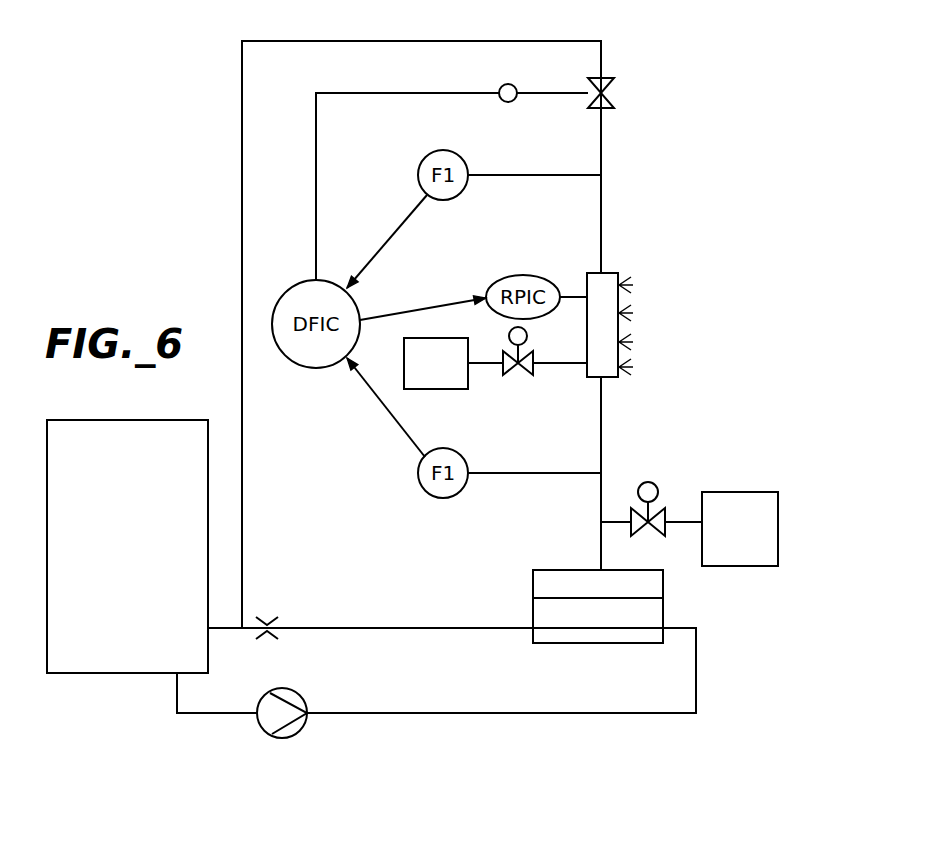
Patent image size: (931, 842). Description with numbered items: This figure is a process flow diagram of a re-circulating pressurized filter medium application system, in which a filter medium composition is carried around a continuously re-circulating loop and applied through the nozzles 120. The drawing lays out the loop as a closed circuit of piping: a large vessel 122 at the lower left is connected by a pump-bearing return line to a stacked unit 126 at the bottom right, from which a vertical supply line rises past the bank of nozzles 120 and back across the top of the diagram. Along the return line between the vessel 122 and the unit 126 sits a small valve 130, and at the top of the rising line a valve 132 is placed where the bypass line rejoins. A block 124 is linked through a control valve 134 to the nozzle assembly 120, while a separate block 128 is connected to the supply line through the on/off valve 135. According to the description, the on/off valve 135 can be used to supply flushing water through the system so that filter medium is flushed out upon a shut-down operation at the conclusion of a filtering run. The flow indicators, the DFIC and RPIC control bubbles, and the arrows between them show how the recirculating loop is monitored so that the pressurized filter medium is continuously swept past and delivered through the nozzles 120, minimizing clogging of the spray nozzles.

The nozzles 120 is at (641, 280).
The reservoir tank 122 is at (127, 546).
The controller 124 is at (453, 363).
The heat exchanger 126 is at (665, 618).
The supply source 128 is at (721, 529).
The valve 130 is at (269, 611).
The valve 132 is at (606, 76).
The control valve 134 is at (524, 374).
The on/off valve 135 is at (668, 512).